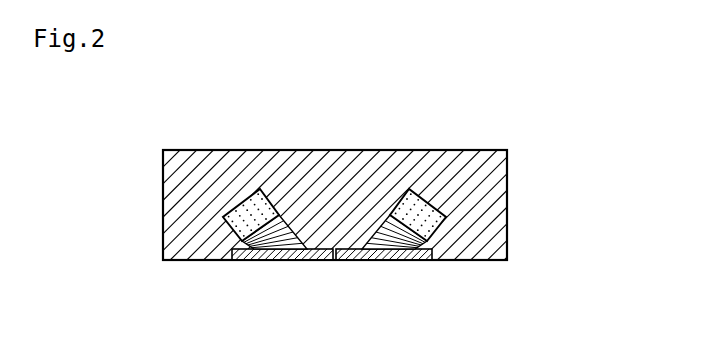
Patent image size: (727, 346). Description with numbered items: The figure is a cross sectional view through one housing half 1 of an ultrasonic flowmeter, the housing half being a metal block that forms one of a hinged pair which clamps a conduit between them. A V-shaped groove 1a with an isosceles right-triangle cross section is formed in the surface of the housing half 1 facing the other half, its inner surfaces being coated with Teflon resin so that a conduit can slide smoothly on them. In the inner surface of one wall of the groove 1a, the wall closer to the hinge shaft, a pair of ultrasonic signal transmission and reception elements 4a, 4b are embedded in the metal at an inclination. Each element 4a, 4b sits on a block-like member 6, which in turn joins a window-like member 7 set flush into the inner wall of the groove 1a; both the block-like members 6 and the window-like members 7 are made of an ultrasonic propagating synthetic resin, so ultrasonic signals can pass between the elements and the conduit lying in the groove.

The housing half 1 is at (495, 187).
The V-shaped groove 1a is at (472, 261).
The ultrasonic signal transmission and reception element 4a is at (252, 207).
The ultrasonic signal transmission and reception element 4b is at (428, 203).
The block-like member 6 is at (260, 240).
The window-like member 7 is at (297, 252).